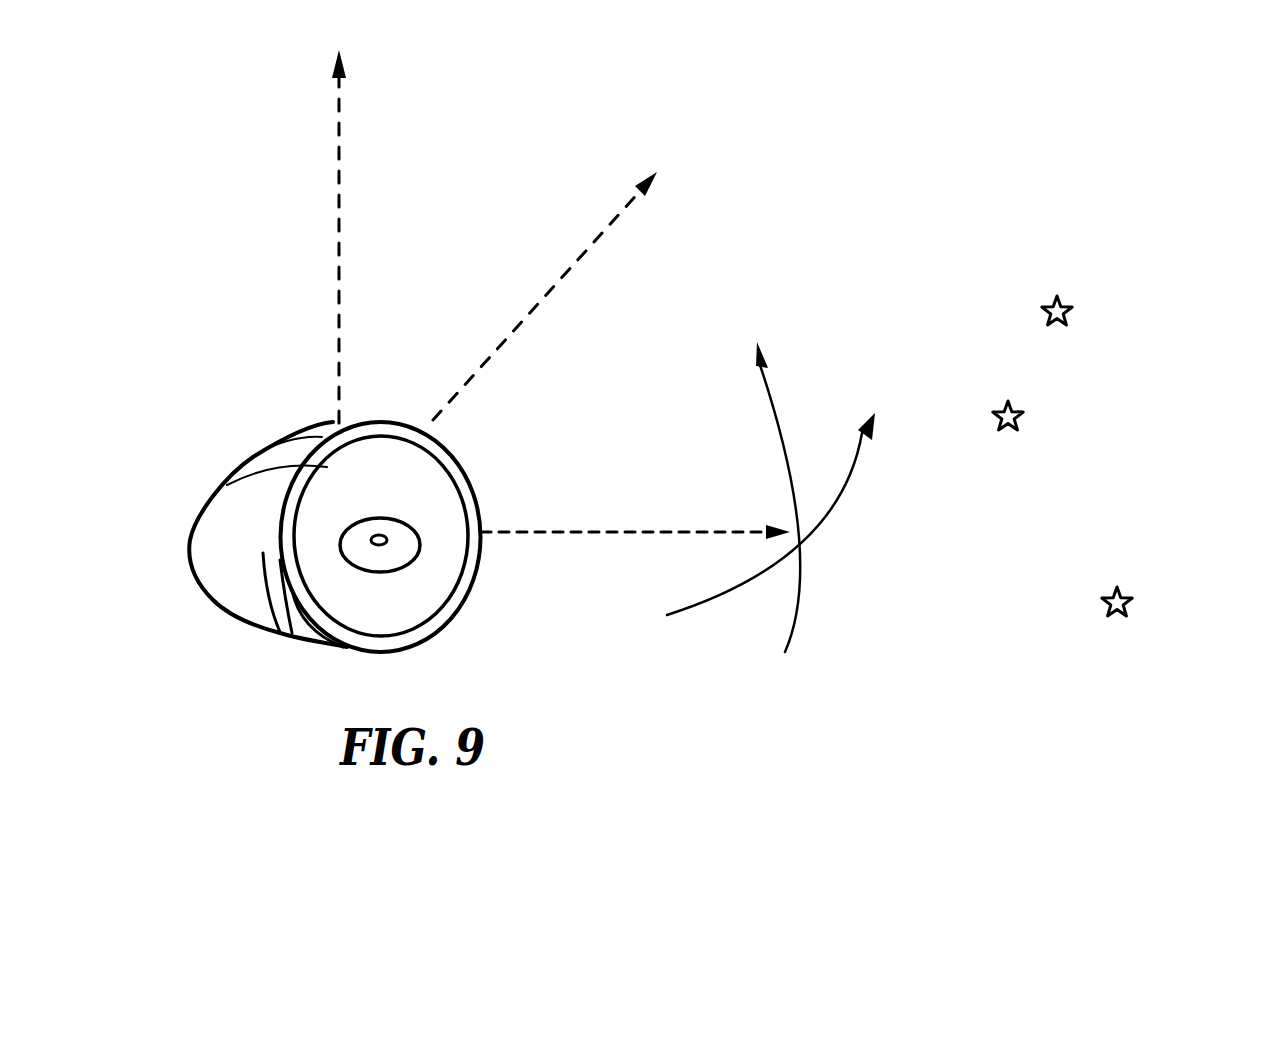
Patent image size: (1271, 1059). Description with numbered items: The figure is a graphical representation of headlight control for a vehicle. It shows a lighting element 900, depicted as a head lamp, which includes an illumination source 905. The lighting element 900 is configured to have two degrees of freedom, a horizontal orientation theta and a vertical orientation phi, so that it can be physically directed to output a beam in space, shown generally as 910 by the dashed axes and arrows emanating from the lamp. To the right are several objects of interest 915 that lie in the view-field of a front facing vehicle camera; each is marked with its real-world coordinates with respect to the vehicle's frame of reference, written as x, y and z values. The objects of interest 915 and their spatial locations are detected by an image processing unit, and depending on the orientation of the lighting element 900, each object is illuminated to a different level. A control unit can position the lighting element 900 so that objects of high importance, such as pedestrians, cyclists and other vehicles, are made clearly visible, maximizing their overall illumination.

The lighting element 900 is at (238, 485).
The illumination source 905 is at (402, 555).
The beam in space 910 is at (545, 206).
The objects of interest 915 is at (1128, 663).